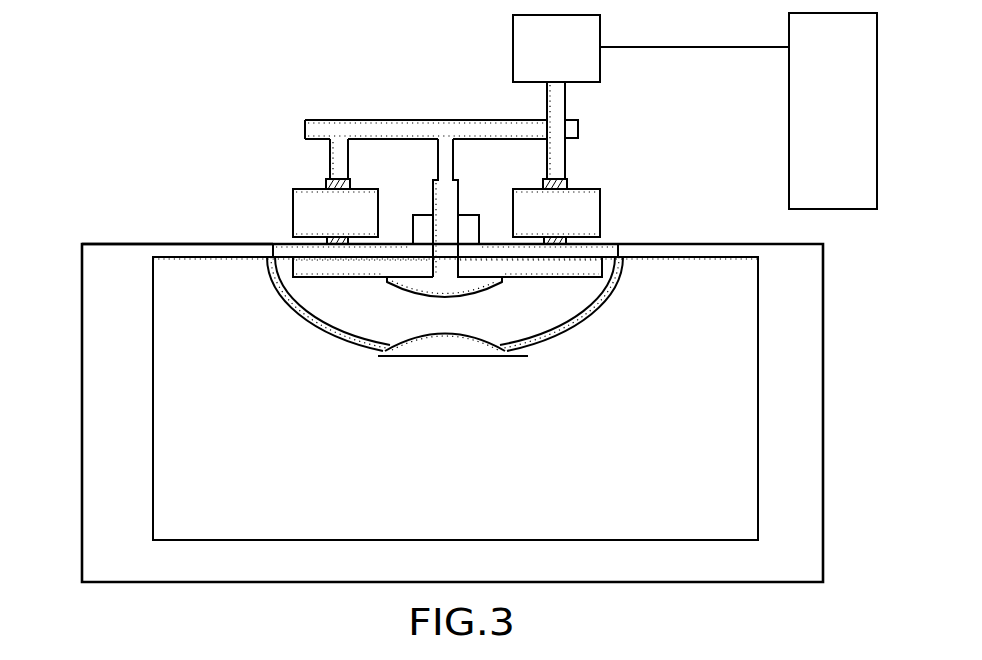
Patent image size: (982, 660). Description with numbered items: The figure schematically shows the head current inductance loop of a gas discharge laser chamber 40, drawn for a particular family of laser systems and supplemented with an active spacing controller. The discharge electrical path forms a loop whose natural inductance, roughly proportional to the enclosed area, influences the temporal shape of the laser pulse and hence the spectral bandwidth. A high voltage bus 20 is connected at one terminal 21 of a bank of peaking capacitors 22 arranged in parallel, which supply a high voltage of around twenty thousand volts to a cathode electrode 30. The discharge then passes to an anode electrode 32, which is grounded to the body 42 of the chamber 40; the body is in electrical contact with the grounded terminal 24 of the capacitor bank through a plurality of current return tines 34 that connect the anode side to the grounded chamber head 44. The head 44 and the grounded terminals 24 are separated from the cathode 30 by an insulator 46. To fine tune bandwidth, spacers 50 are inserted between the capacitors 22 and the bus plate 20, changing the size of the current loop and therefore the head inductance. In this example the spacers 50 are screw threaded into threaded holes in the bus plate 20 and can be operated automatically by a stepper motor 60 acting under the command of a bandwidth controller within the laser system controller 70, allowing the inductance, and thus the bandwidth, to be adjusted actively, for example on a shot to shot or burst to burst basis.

The high voltage bus 20 is at (305, 128).
The terminal 21 is at (327, 185).
The peaking capacitors 22 is at (294, 210).
The grounded terminal 24 is at (275, 243).
The cathode electrode 30 is at (417, 287).
The anode electrode 32 is at (450, 345).
The current return tines 34 is at (307, 330).
The chamber 40 is at (223, 494).
The body 42 is at (100, 412).
The chamber head 44 is at (167, 244).
The insulator 46 is at (528, 263).
The spacers 50 is at (330, 153).
The stepper motor 60 is at (513, 42).
The laser system controller 70 is at (789, 110).